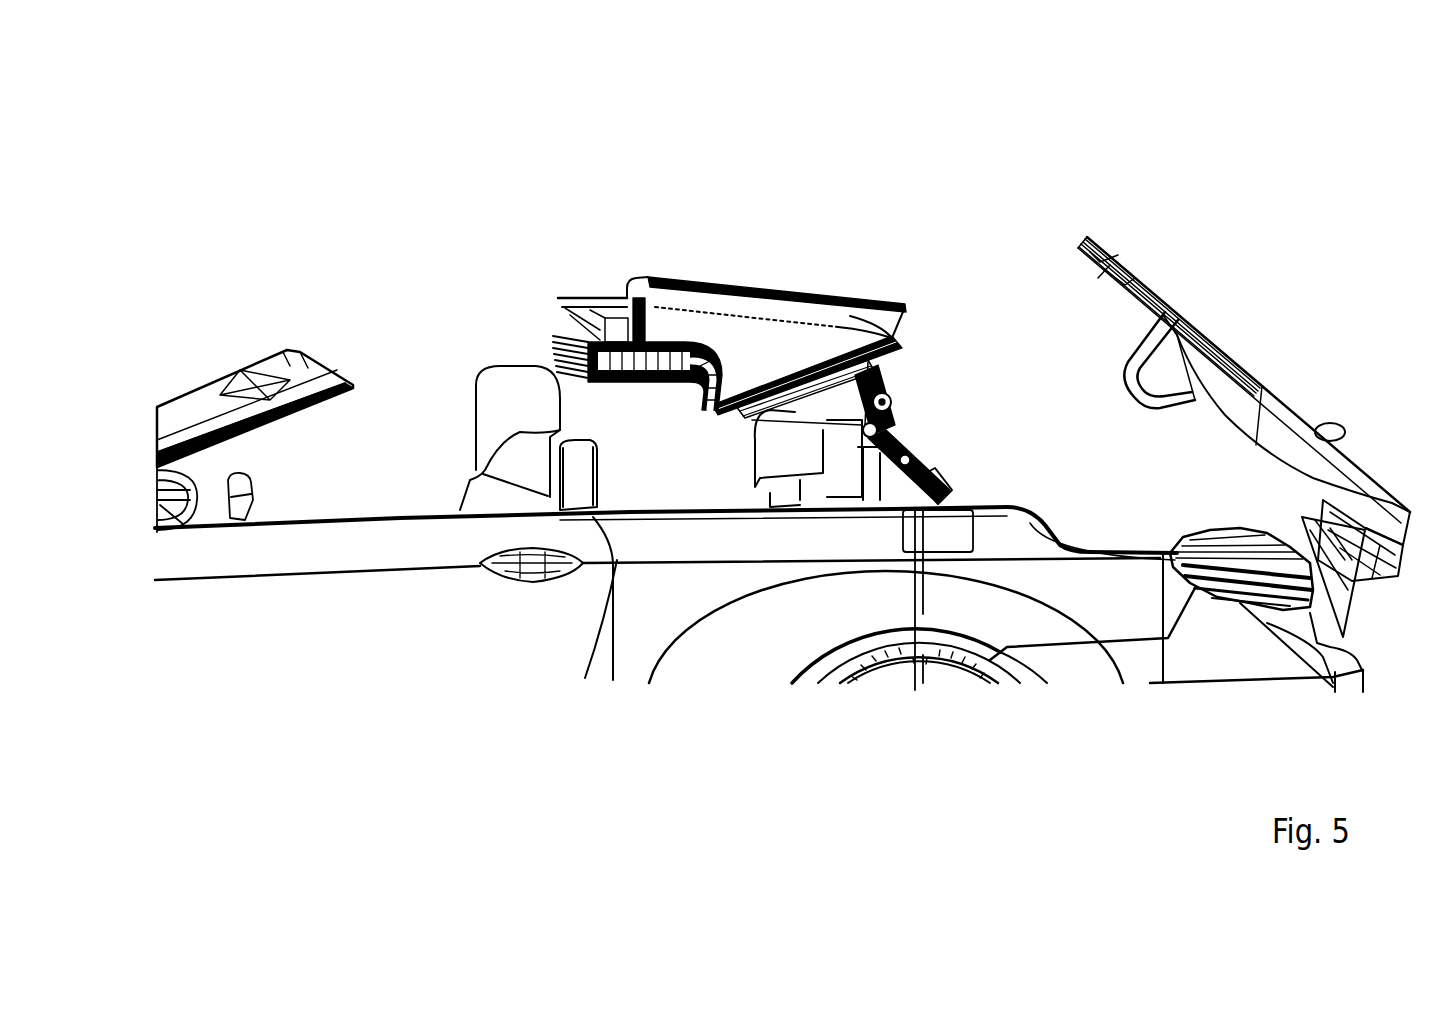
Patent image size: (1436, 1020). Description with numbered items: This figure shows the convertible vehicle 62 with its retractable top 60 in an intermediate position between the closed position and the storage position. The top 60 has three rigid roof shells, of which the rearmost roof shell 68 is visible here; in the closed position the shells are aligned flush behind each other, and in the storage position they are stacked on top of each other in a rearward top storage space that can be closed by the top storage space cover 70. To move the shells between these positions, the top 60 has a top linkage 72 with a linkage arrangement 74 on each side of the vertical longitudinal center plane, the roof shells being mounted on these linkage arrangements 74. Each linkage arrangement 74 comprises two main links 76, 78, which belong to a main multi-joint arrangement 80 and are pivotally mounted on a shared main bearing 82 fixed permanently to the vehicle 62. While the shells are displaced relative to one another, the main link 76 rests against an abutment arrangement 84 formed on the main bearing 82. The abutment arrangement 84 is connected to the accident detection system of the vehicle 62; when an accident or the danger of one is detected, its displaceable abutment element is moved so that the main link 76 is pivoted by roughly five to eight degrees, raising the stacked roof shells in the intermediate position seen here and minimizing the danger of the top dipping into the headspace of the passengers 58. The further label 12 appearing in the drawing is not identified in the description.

The vehicle 12 is at (381, 461).
The passengers 58 is at (487, 413).
The retractable top 60 is at (693, 280).
The vehicle 62 is at (737, 655).
The rigid roof shell 68 is at (788, 308).
The top storage space cover 70 is at (1257, 385).
The top linkage 72 is at (887, 406).
The linkage arrangement 74 is at (670, 378).
The main link 76 is at (903, 453).
The main link 78 is at (817, 467).
The main multi-joint arrangement 80 is at (938, 490).
The main bearing 82 is at (963, 537).
The abutment arrangement 84 is at (915, 690).